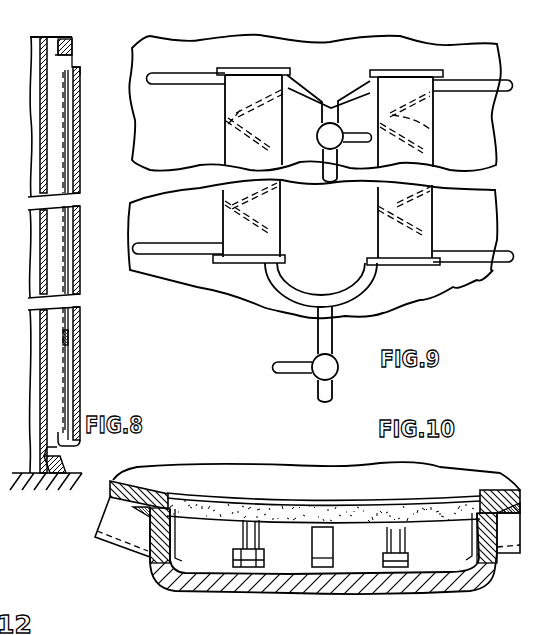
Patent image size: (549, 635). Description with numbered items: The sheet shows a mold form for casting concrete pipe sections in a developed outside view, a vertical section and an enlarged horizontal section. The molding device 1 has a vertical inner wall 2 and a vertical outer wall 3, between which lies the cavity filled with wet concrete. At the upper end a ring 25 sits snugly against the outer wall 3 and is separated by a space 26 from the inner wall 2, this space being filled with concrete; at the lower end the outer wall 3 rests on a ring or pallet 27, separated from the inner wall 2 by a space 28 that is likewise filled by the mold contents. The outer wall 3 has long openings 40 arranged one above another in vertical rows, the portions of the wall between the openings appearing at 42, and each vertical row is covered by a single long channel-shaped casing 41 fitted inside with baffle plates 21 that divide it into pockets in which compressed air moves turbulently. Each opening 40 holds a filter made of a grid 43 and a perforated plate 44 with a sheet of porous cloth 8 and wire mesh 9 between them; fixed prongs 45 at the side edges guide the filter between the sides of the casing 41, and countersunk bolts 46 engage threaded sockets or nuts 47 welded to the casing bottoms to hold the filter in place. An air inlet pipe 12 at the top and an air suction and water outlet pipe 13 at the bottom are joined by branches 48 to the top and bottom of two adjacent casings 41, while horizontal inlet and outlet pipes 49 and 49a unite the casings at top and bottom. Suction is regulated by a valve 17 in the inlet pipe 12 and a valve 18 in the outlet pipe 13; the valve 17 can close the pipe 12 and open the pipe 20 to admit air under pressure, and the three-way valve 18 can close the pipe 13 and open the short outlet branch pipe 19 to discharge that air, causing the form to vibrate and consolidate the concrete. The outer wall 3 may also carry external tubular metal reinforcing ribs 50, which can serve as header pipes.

In FIG. 8, the mold form 1 is at (28, 142).
In FIG. 8, the inner wall 2 is at (27, 243).
In FIG. 9, the outer wall 3 is at (312, 248).
In FIG. 10, the outer wall 3 is at (110, 500).
In FIG. 10, the porous cloth 8 is at (163, 575).
In FIG. 10, the wire mesh 9 is at (188, 542).
In FIG. 8, the air inlet pipe 12 is at (42, 97).
In FIG. 9, the air inlet pipe 12 is at (328, 178).
In FIG. 9, the air suction and water outlet pipe 13 is at (333, 393).
In FIG. 9, the valve 17 is at (317, 139).
In FIG. 9, the valve 18 is at (334, 355).
In FIG. 9, the outlet branch pipe 19 is at (290, 375).
In FIG. 9, the pipe 20 is at (364, 133).
In FIG. 9, the baffle plates 21 is at (228, 124).
In FIG. 8, the ring 25 is at (62, 41).
In FIG. 8, the space 26 is at (51, 37).
In FIG. 8, the ring or pallet 27 is at (55, 464).
In FIG. 8, the space 28 is at (78, 400).
In FIG. 8, the openings 40 is at (69, 373).
In FIG. 10, the openings 40 is at (495, 493).
In FIG. 8, the casing 41 is at (77, 287).
In FIG. 9, the casing 41 is at (224, 228).
In FIG. 10, the casing 41 is at (203, 583).
In FIG. 8, the wall portions 42 is at (65, 343).
In FIG. 10, the grid 43 is at (373, 504).
In FIG. 10, the perforated plate 44 is at (405, 528).
In FIG. 10, the prongs 45 is at (468, 570).
In FIG. 10, the countersunk bolts 46 is at (283, 522).
In FIG. 10, the threaded sockets or nuts 47 is at (258, 590).
In FIG. 9, the branches 48 is at (310, 90).
In FIG. 9, the horizontal inlet pipe 49 is at (184, 85).
In FIG. 9, the horizontal outlet pipe 49a is at (484, 264).
In FIG. 10, the tubular reinforcing ribs 50 is at (105, 530).